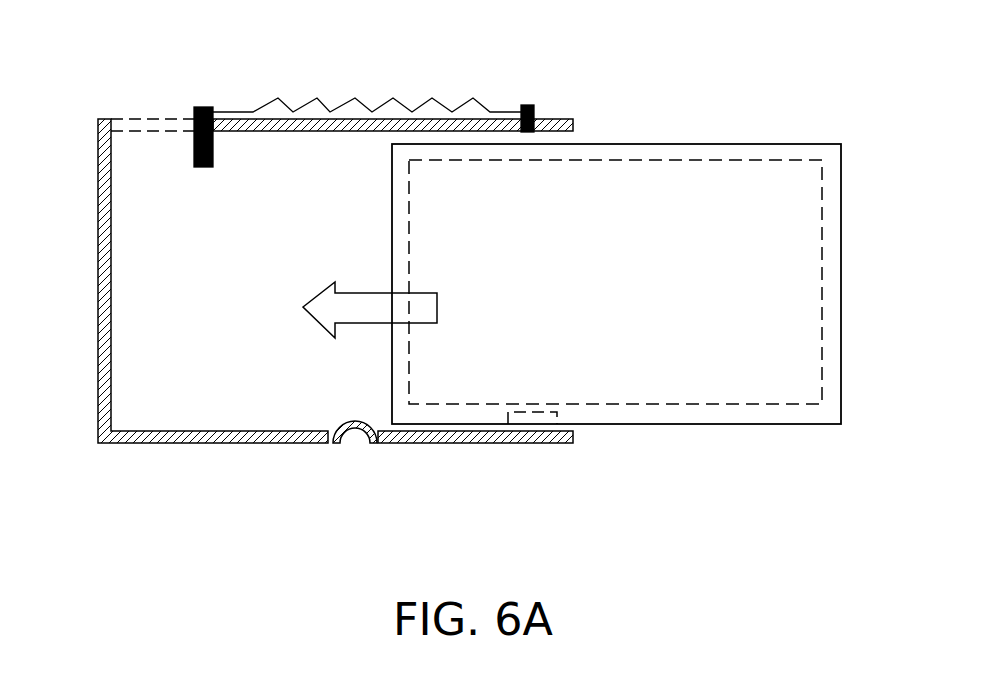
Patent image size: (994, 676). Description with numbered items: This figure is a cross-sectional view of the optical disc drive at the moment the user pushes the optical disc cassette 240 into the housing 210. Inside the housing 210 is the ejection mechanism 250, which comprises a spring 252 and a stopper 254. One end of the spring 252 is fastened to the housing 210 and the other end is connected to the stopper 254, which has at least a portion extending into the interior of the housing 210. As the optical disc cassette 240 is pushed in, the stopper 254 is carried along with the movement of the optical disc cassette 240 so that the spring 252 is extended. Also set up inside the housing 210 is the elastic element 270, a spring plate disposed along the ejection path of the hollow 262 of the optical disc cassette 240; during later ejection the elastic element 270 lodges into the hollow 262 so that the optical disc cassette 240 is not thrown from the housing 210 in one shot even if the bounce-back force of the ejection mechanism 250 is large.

The housing 210 is at (99, 285).
The optical disc cassette 240 is at (830, 292).
The ejection mechanism 250 is at (293, 46).
The spring 252 is at (290, 110).
The stopper 254 is at (202, 107).
The hollow 262 is at (531, 418).
The elastic element 270 is at (356, 422).